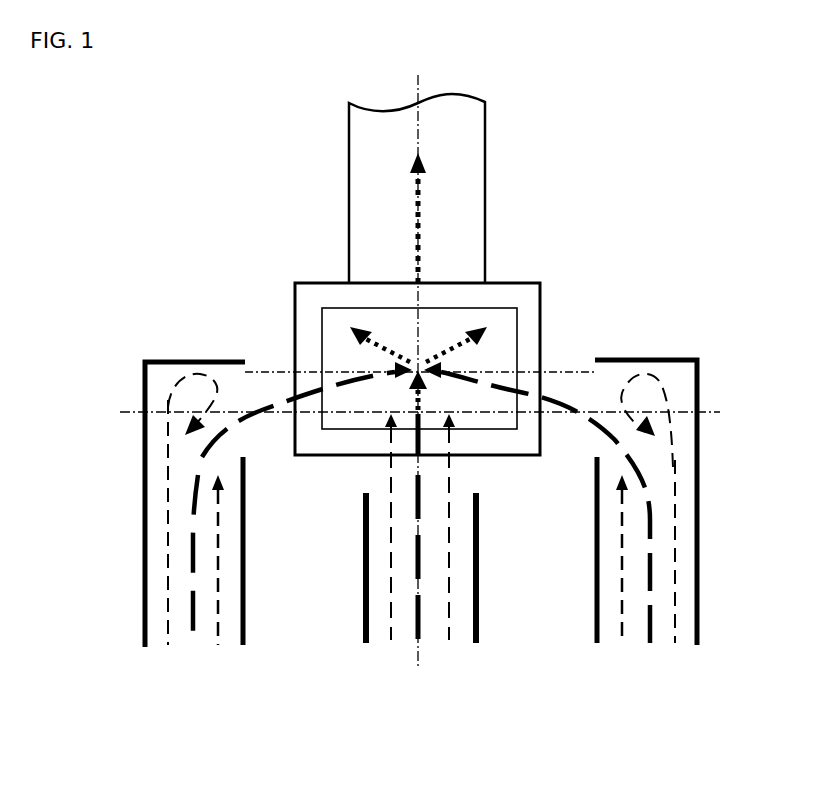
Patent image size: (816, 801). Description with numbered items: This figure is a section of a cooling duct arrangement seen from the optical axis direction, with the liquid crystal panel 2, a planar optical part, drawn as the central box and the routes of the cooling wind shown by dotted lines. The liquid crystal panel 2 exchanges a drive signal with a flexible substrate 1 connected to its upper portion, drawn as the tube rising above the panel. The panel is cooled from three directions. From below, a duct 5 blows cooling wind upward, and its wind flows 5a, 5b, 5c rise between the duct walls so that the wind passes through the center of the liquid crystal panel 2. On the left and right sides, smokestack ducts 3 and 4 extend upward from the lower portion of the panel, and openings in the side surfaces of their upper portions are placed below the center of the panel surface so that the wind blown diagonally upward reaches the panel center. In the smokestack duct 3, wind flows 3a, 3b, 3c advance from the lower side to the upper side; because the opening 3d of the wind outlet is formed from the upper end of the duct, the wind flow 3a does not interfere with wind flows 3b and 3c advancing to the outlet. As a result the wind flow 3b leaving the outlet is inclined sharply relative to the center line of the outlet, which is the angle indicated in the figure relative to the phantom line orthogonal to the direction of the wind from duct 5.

The flexible substrate 1 is at (463, 165).
The liquid crystal panel 2 is at (509, 290).
The smokestack duct 3 is at (218, 358).
The smokestack duct 4 is at (615, 360).
The duct 5 is at (476, 520).
The wind flow 3a is at (165, 645).
The wind flow 3b is at (191, 645).
The wind flow 3c is at (218, 645).
The opening 3d is at (250, 438).
The wind flow 5a is at (390, 641).
The wind flow 5b is at (416, 643).
The wind flow 5c is at (448, 643).